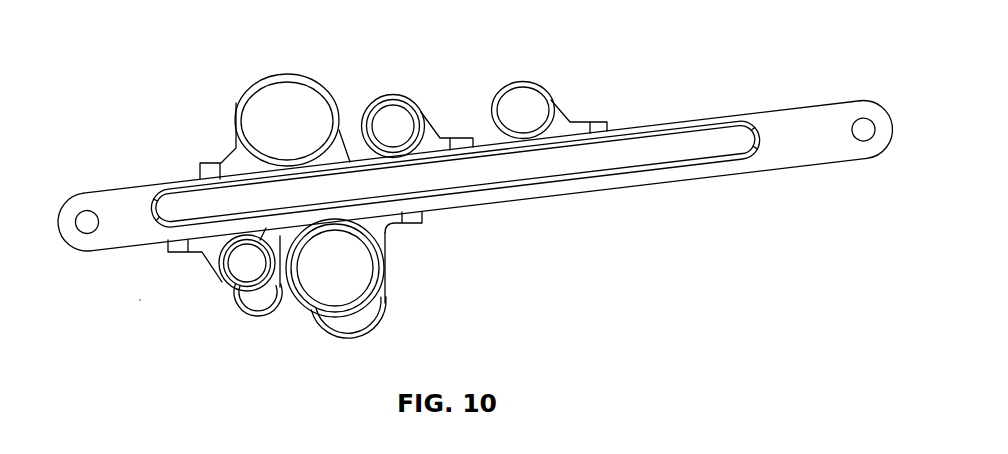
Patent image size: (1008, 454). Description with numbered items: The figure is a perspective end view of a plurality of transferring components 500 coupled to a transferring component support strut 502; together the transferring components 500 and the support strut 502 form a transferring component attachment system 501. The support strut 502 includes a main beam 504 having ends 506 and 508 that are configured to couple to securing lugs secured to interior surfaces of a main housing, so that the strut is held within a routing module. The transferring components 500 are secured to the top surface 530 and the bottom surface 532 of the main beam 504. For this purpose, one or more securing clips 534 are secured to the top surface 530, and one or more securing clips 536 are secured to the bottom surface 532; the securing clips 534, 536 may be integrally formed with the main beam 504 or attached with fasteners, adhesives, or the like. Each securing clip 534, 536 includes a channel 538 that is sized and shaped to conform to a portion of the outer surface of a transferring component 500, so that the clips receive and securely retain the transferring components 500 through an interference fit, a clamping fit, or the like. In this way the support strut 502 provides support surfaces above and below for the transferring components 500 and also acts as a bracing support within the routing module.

The transferring component 500 is at (276, 100).
The transferring component attachment system 501 is at (147, 52).
The transferring component support strut 502 is at (783, 108).
The main beam 504 is at (673, 184).
The end 506 is at (82, 202).
The end 508 is at (866, 101).
The top surface 530 is at (145, 186).
The bottom surface 532 is at (150, 244).
The securing clip 534 is at (236, 142).
The securing clip 536 is at (387, 247).
The channel 538 is at (261, 160).